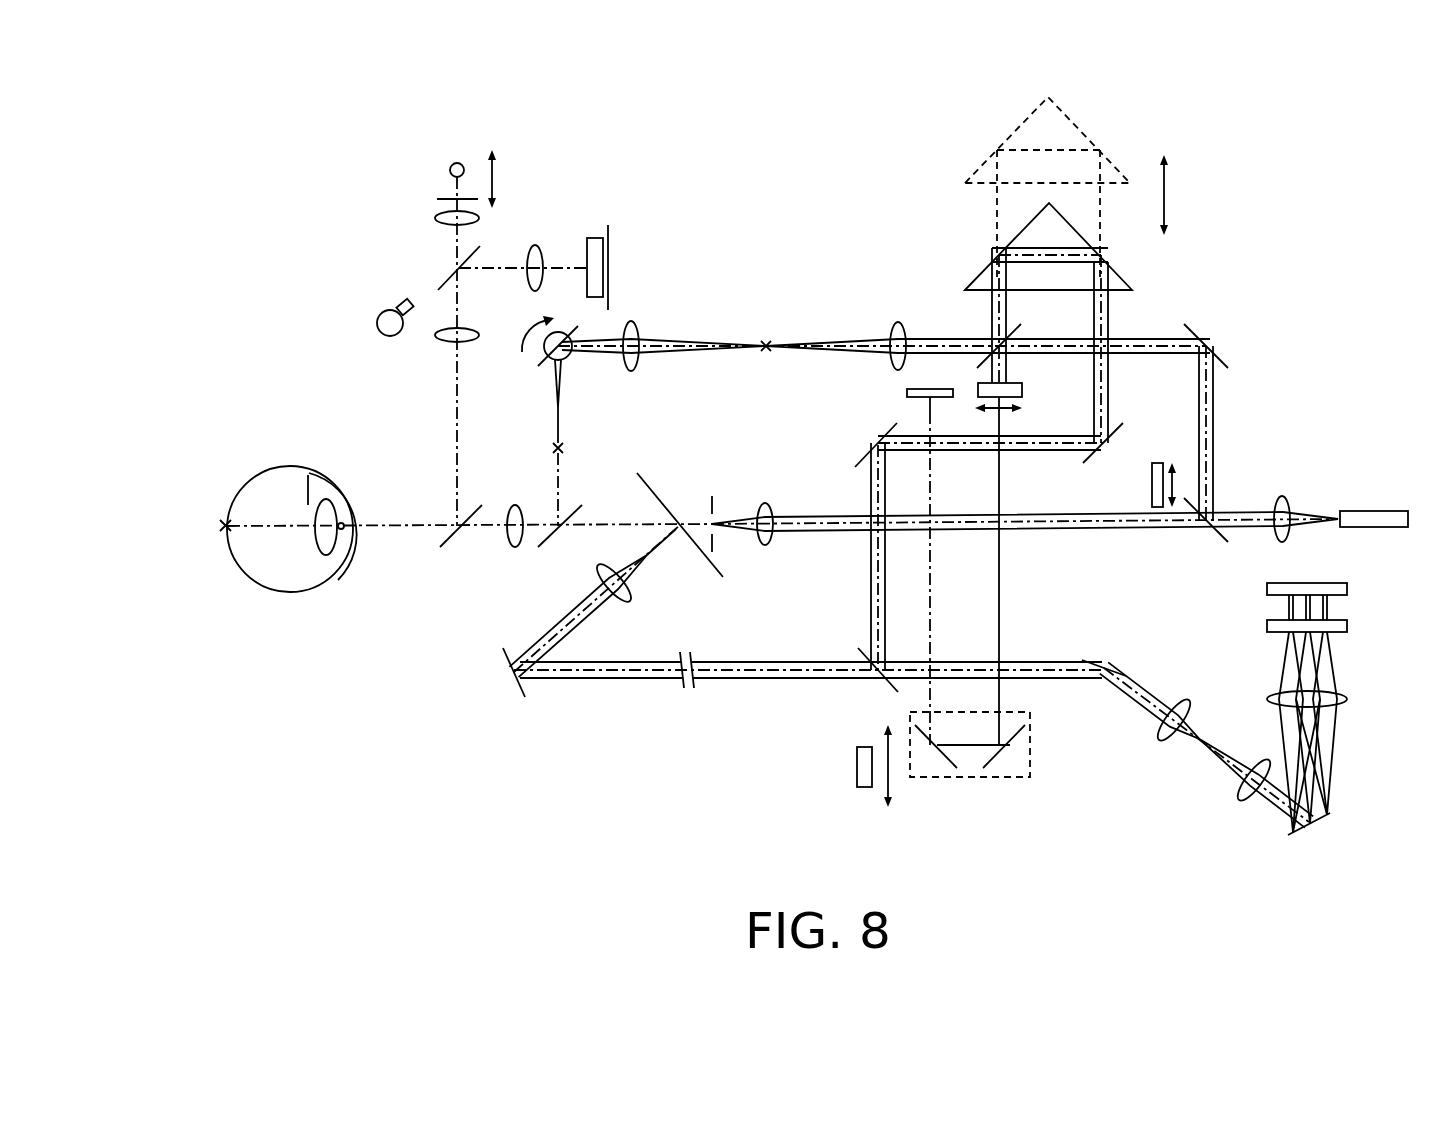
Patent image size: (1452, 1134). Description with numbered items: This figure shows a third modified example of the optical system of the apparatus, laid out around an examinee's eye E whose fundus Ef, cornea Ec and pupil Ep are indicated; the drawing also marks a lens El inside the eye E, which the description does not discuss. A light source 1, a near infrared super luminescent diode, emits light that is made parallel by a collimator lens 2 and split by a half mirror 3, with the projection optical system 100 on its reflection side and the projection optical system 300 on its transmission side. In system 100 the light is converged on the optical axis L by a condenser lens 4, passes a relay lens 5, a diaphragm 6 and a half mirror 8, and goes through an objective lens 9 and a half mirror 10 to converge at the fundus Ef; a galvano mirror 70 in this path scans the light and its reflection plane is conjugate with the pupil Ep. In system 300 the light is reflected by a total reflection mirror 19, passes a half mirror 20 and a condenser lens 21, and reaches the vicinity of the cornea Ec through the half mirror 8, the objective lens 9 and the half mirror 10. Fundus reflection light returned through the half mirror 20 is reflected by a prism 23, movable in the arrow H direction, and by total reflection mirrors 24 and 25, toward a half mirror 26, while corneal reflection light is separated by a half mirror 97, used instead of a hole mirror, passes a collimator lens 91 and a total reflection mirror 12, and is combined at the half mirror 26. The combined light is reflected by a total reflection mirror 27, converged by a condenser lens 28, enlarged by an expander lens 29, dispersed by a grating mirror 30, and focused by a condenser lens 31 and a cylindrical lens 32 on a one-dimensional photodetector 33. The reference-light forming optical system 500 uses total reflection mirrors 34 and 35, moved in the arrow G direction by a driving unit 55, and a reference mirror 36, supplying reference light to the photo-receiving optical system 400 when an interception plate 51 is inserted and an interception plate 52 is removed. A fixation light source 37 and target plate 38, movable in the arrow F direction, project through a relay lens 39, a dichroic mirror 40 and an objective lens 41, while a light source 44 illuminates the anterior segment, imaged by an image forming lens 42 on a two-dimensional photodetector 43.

The light source 1 is at (1362, 511).
The collimator lens 2 is at (1285, 496).
The half mirror 3 is at (1212, 510).
The condenser lens 4 is at (892, 336).
The relay lens 5 is at (633, 322).
The diaphragm 6 is at (714, 508).
The half mirror 8 is at (552, 545).
The objective lens 9 is at (512, 548).
The half mirror 10 is at (455, 545).
The total reflection mirror 12 is at (519, 697).
The total reflection mirror 19 is at (1205, 328).
The half mirror 20 is at (960, 365).
The condenser lens 21 is at (768, 502).
The prism 23 is at (1131, 282).
The total reflection mirror 24 is at (1085, 460).
The total reflection mirror 25 is at (882, 432).
The half mirror 26 is at (863, 655).
The total reflection mirror 27 is at (1115, 663).
The condenser lens 28 is at (1165, 737).
The expander lens 29 is at (1243, 800).
The grating mirror 30 is at (1332, 818).
The condenser lens 31 is at (1348, 700).
The cylindrical lens 32 is at (1348, 627).
The one-dimensional photodetector 33 is at (1348, 588).
The total reflection mirror 34 is at (993, 770).
The total reflection mirror 35 is at (935, 770).
The reference mirror 36 is at (905, 392).
The light source 37 is at (452, 163).
The target plate 38 is at (440, 197).
The relay lens 39 is at (436, 218).
The dichroic mirror 40 is at (445, 278).
The objective lens 41 is at (438, 340).
The image forming lens 42 is at (533, 245).
The two-dimensional photodetector 43 is at (590, 238).
The light source 44 is at (386, 304).
The interception plate 51 is at (1158, 460).
The interception plate 52 is at (1022, 388).
The driving unit 55 is at (857, 768).
The galvano mirror 70 is at (540, 362).
The collimator lens 91 is at (630, 598).
The half mirror 97 is at (651, 483).
The projection optical system 100 is at (797, 290).
The projection optical system 300 is at (1097, 546).
The photo-receiving optical system 400 is at (1191, 768).
The reference-light forming optical system 500 is at (984, 812).
The examinee's eye E is at (270, 567).
The fundus Ef is at (223, 517).
The pupil Ep is at (345, 524).
The cornea Ec is at (340, 557).
The crystalline lens El is at (308, 502).
The optical axis L is at (665, 346).
The arrow F direction F is at (502, 179).
The arrow G direction G is at (878, 764).
The arrow H direction H is at (1175, 195).